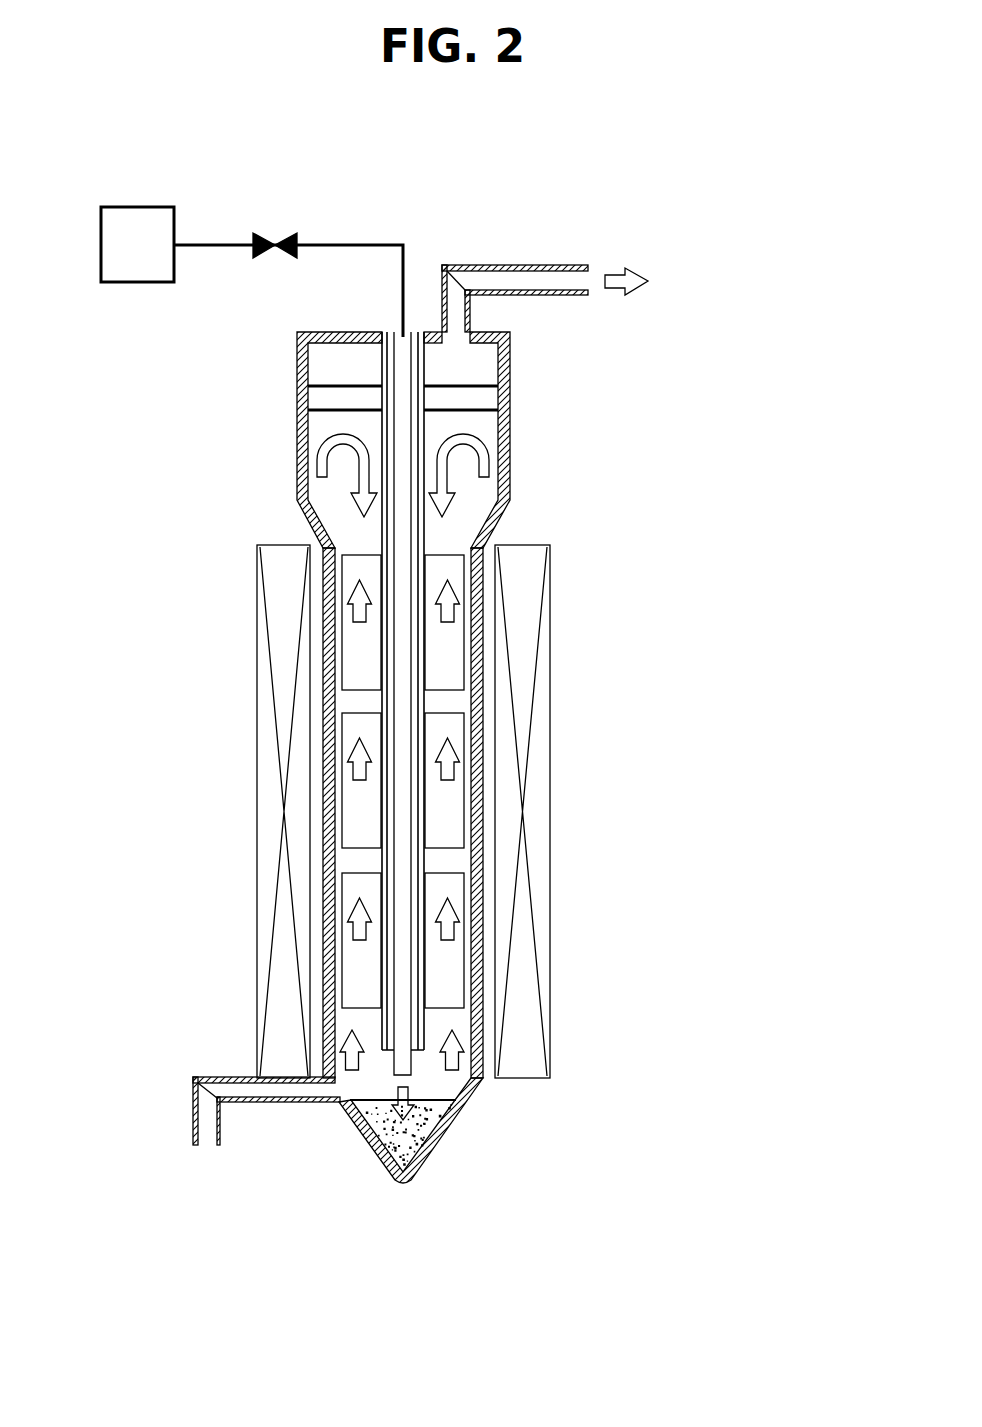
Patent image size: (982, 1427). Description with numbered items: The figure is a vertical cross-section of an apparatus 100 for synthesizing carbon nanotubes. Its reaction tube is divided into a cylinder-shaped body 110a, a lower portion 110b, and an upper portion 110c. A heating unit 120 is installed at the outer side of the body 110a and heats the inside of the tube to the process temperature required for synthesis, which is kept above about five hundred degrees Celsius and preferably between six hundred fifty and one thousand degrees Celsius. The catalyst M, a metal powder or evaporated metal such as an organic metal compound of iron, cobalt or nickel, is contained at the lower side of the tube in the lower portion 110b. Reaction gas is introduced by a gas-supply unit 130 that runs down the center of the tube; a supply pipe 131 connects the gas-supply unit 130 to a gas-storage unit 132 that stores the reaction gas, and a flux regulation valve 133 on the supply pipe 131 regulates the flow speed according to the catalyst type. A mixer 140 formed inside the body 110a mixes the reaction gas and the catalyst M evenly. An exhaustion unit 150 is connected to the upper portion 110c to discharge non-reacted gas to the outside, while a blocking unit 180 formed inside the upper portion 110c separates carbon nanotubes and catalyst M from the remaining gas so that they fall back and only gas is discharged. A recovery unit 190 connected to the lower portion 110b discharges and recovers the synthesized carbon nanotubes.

The apparatus for synthesizing carbon nanotubes 100 is at (712, 318).
The body 110a is at (479, 722).
The lower portion 110b is at (447, 1130).
The upper portion 110c is at (510, 425).
The heating unit 120 is at (540, 568).
The gas-supply unit 130 is at (420, 1076).
The supply pipe 131 is at (370, 243).
The gas-storage unit 132 is at (133, 226).
The flux regulation valve 133 is at (282, 232).
The mixer 140 is at (453, 820).
The exhaustion unit 150 is at (577, 280).
The blocking unit 180 is at (330, 396).
The recovery unit 190 is at (205, 1118).
The catalyst M is at (406, 1184).